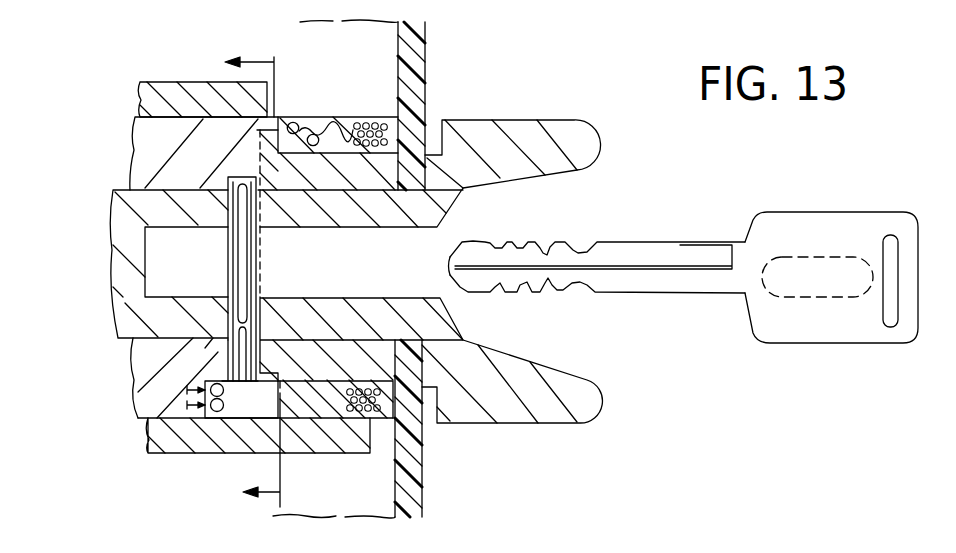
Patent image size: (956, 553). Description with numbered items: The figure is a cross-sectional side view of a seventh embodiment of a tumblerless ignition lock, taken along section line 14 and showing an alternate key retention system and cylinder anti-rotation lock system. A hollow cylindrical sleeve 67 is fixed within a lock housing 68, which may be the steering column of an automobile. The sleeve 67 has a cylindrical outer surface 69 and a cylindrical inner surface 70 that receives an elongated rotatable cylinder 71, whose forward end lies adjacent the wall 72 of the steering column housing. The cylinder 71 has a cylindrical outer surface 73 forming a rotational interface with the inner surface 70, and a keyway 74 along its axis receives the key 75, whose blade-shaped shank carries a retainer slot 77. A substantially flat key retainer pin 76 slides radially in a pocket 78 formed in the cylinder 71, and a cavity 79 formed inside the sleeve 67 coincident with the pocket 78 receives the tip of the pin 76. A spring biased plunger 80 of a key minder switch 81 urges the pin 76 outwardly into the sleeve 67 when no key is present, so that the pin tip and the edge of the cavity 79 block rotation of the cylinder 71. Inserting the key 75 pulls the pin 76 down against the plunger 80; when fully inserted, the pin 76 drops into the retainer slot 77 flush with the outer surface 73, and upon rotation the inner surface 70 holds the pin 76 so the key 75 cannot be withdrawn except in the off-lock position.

The section line 14- 14 is at (252, 280).
The hollow cylindrical sleeve 67 is at (147, 153).
The lock housing 68 is at (172, 90).
The cylindrical outer surface 69 is at (153, 423).
The cylindrical inner surface 70 is at (165, 330).
The rotatable cylinder 71 is at (128, 283).
The wall 72 is at (418, 63).
The cylindrical outer surface 73 is at (148, 388).
The keyway 74 is at (425, 300).
The key 75 is at (867, 212).
The key retainer pin 76 is at (243, 281).
The retainer slot 77 is at (547, 254).
The pocket 78 is at (258, 228).
The cavity 79 is at (232, 230).
The spring biased plunger 80 is at (242, 342).
The key minder switch 81 is at (247, 408).